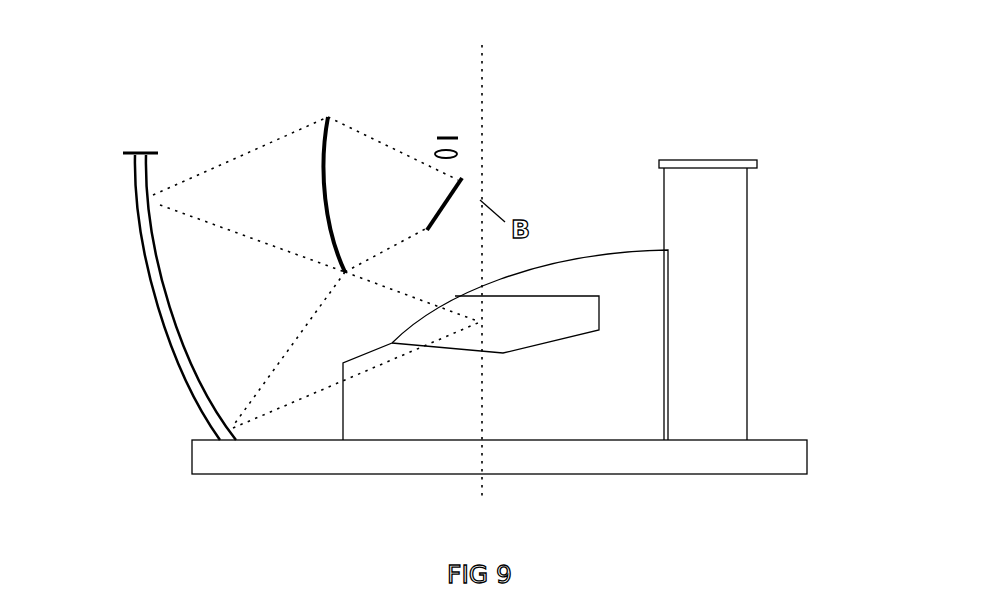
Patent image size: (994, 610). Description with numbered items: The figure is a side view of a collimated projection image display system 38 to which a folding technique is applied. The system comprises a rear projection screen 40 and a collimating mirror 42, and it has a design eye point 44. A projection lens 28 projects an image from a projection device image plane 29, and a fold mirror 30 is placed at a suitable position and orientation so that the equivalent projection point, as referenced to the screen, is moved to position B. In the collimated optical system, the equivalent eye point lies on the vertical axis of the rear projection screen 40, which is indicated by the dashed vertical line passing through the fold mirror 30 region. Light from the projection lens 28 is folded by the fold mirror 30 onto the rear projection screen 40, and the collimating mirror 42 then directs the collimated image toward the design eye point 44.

The projection lens 28 is at (457, 151).
The projection device image plane 29 is at (447, 134).
The fold mirror 30 is at (465, 183).
The collimated projection image display system 38 is at (619, 98).
The rear projection screen 40 is at (328, 117).
The collimating mirror 42 is at (123, 158).
The design eye point 44 is at (477, 318).